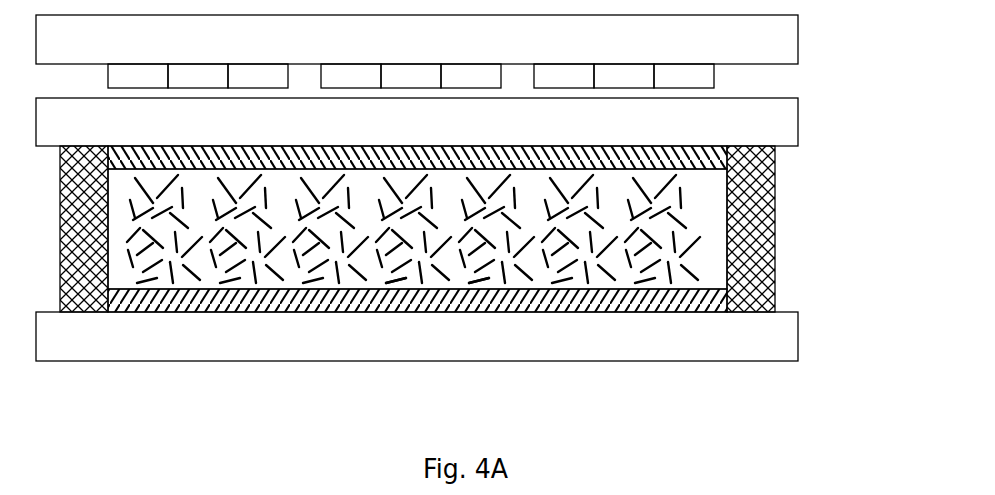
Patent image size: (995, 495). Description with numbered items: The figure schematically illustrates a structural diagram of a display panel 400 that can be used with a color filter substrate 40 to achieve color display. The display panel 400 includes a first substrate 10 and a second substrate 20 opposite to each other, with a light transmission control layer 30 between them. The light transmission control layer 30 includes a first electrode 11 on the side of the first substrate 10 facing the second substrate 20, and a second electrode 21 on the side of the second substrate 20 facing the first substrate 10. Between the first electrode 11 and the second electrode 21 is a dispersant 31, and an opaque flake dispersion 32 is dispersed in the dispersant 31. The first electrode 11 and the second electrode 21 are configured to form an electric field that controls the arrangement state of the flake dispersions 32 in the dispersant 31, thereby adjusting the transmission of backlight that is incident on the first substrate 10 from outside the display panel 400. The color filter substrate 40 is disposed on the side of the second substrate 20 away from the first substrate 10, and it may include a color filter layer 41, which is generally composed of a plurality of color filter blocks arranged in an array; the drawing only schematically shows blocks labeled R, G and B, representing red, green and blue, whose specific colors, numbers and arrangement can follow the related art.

The display panel 400 is at (457, 214).
The color filter substrate 40 is at (812, 15).
The color filter layer 41 is at (700, 76).
The second substrate 20 is at (780, 122).
The second electrode 21 is at (778, 157).
The light transmission control layer 30 is at (793, 157).
The dispersant 31 is at (493, 283).
The flake dispersion 32 is at (398, 281).
The first electrode 11 is at (742, 302).
The first substrate 10 is at (780, 336).